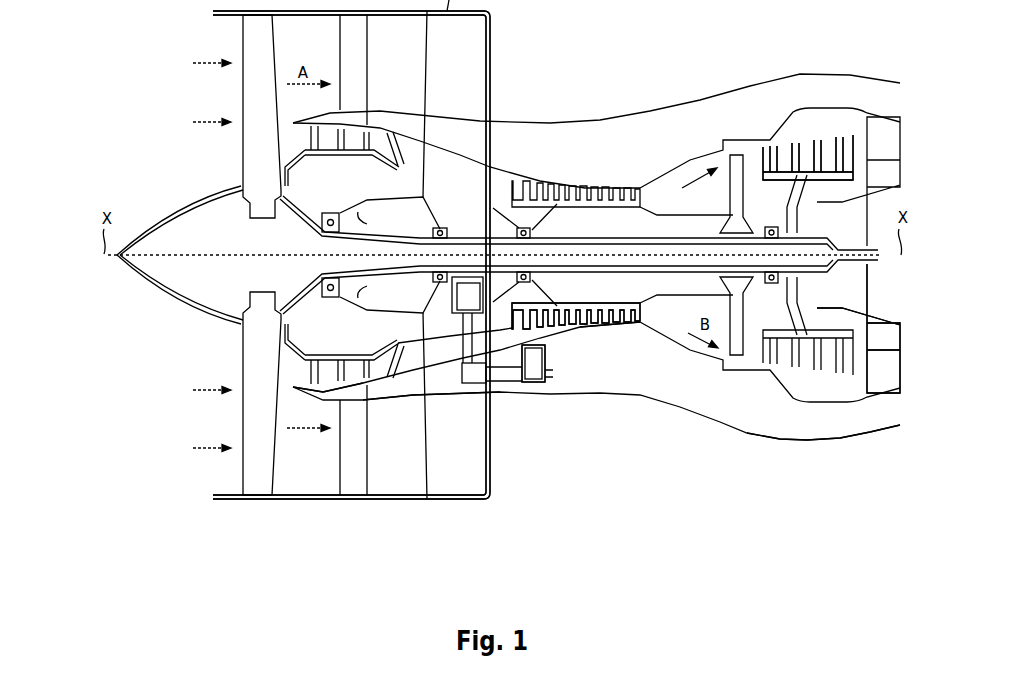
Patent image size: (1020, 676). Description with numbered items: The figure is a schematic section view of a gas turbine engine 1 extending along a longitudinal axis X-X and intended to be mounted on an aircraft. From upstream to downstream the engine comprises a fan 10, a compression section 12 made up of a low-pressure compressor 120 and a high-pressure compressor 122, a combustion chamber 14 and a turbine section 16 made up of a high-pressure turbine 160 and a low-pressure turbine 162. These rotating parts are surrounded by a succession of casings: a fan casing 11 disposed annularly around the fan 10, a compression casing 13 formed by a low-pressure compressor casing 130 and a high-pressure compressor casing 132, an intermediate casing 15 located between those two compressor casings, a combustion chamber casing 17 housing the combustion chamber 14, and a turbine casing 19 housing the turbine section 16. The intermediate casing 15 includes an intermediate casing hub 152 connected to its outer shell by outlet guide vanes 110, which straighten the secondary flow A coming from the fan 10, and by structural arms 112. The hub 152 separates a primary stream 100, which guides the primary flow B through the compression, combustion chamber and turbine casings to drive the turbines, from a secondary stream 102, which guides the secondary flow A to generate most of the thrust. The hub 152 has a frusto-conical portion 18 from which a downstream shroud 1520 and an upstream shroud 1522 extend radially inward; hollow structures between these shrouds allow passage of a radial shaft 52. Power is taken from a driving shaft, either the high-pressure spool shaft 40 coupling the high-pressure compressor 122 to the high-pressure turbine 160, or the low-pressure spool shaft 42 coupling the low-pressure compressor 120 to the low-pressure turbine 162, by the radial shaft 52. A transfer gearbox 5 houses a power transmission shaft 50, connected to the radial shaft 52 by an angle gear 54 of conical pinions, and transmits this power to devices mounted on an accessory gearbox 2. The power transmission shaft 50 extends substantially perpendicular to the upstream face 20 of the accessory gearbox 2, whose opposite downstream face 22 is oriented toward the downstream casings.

The gas turbine engine 1 is at (80, 36).
The accessory gearbox 2 is at (545, 363).
The transfer gearbox 5 is at (520, 390).
The fan 10 is at (253, 415).
The fan casing 11 is at (213, 498).
The compression section 12 is at (448, 116).
The compression casing 13 is at (467, 157).
The combustion chamber 14 is at (685, 367).
The intermediate casing 15 is at (416, 478).
The turbine section 16 is at (828, 411).
The combustion chamber casing 17 is at (668, 170).
The frusto-conical portion 18 is at (447, 396).
The turbine casing 19 is at (802, 125).
The upstream face 20 is at (470, 327).
The downstream face 22 is at (556, 378).
The high-pressure spool shaft 40 is at (673, 213).
The low-pressure spool shaft 42 is at (583, 236).
The power transmission shaft 50 is at (500, 382).
The radial shaft 52 is at (510, 352).
The angle gear 54 is at (462, 372).
The primary stream 100 is at (706, 185).
The secondary stream 102 is at (309, 458).
The outlet guide vanes 110 is at (346, 36).
The structural arms 112 is at (478, 55).
The low-pressure compressor 120 is at (317, 398).
The high-pressure compressor 122 is at (625, 394).
The low-pressure compressor casing 130 is at (353, 123).
The high-pressure compressor casing 132 is at (632, 338).
The intermediate casing hub 152 is at (410, 384).
The high-pressure turbine 160 is at (738, 145).
The low-pressure turbine 162 is at (820, 125).
The downstream shroud 1520 is at (490, 148).
The upstream shroud 1522 is at (429, 457).